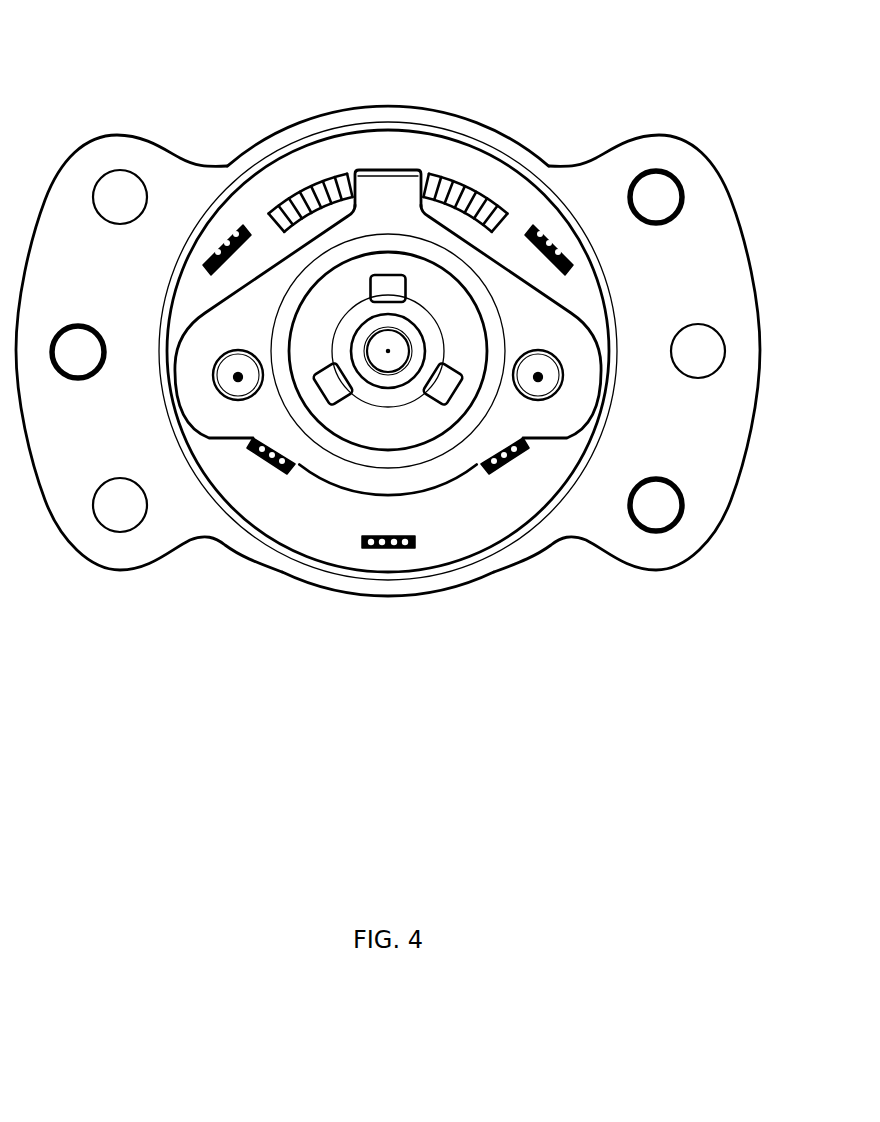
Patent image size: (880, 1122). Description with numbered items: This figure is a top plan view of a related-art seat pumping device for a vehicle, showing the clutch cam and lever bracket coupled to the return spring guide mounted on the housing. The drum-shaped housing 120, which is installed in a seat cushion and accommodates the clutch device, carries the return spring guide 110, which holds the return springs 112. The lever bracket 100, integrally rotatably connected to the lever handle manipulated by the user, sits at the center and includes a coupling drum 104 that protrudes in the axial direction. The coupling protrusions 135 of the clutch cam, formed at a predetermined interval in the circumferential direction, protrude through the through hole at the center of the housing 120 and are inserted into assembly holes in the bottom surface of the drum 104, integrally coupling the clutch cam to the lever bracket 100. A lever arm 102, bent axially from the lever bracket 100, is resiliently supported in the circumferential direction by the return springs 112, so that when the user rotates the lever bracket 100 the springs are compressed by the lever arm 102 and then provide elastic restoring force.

The lever bracket 100 is at (336, 500).
The lever arm 102 is at (388, 183).
The coupling drum 104 is at (393, 430).
The return spring guide 110 is at (534, 192).
The return springs 112 is at (463, 182).
The housing 120 is at (303, 106).
The coupling protrusions 135 is at (382, 275).